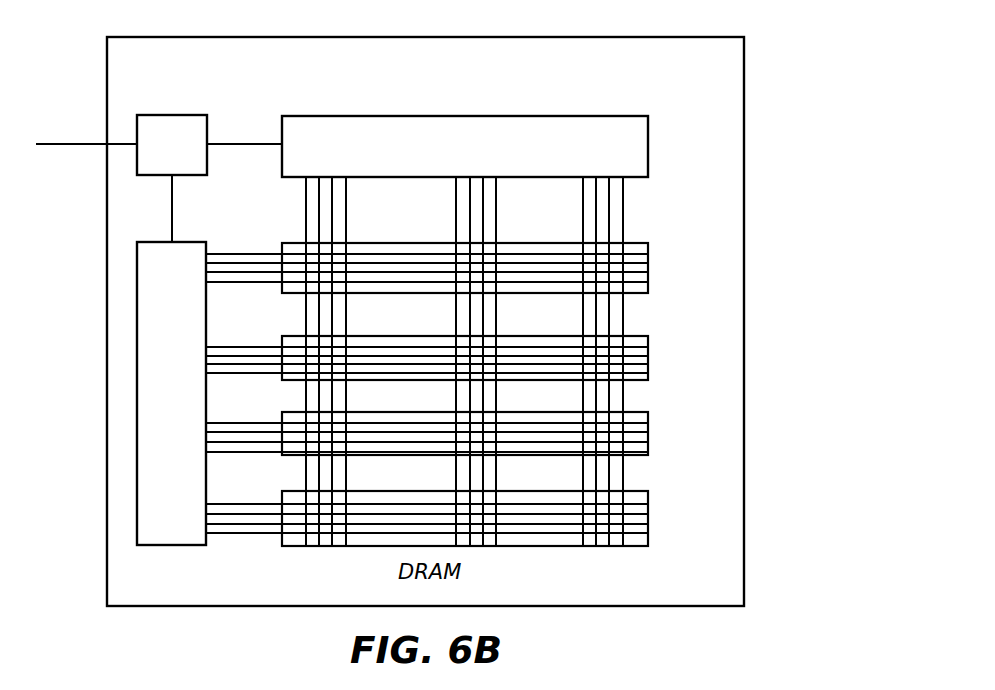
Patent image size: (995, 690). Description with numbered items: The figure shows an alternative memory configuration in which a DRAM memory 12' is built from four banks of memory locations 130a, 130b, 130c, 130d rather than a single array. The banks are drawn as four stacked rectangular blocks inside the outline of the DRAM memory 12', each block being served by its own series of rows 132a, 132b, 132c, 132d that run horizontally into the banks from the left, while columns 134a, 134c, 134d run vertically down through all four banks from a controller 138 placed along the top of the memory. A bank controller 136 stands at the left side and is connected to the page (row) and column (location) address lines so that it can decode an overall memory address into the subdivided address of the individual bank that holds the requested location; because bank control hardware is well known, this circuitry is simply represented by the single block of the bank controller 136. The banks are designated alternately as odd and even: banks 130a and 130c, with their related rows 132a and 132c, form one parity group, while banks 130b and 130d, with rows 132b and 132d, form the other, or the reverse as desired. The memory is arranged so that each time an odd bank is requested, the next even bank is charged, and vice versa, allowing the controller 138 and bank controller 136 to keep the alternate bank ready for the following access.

The DRAM memory 12' is at (460, 321).
The controller 138 is at (579, 115).
The bank controller 136 is at (136, 377).
The bank of memory locations 130a is at (654, 491).
The bank of memory locations 130b is at (654, 412).
The bank of memory locations 130c is at (654, 336).
The bank of memory locations 130d is at (654, 243).
The rows 132a is at (273, 536).
The rows 132b is at (273, 445).
The rows 132c is at (273, 376).
The rows 132d is at (273, 285).
The columns 134a is at (306, 221).
The columns 134c is at (498, 221).
The columns 134d is at (624, 221).